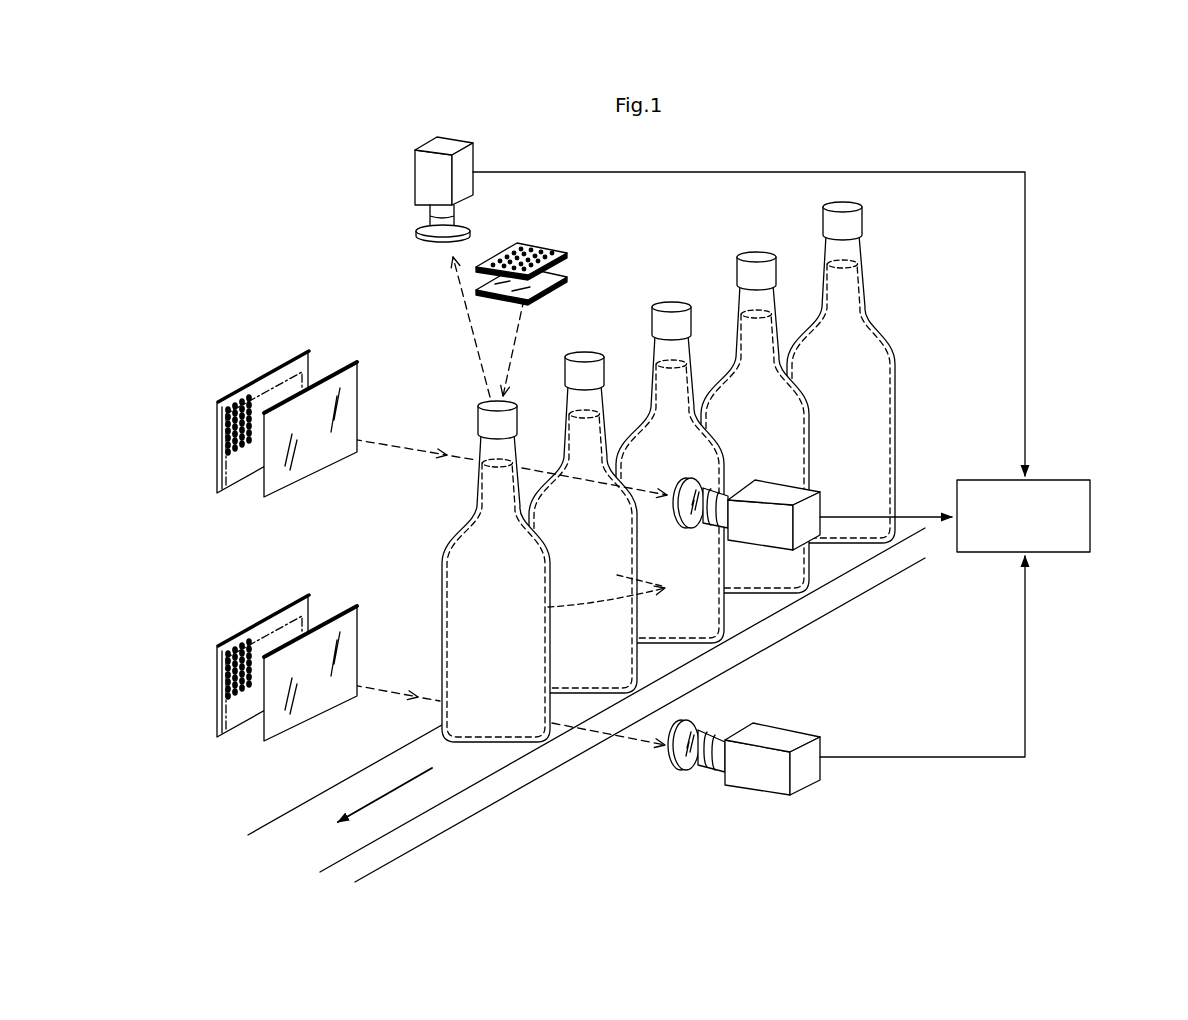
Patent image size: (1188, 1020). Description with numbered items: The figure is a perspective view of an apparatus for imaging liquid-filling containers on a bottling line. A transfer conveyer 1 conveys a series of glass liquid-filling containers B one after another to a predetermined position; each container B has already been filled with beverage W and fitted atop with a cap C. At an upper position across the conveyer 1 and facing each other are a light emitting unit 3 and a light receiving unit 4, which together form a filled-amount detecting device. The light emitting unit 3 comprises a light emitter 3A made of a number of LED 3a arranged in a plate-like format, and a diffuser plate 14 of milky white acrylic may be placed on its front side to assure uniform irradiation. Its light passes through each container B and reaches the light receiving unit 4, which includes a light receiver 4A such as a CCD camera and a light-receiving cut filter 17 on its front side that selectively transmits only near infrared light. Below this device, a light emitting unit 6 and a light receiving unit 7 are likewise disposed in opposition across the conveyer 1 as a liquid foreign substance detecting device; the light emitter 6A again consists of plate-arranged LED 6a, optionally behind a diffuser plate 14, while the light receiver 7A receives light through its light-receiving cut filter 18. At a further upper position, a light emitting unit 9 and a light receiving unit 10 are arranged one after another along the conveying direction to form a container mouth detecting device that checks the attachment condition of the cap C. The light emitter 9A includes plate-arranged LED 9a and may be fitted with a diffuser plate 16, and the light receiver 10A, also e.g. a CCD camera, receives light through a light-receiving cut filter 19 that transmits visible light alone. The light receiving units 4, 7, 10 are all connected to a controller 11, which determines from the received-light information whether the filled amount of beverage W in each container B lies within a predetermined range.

The transfer conveyer 1 is at (470, 808).
The light emitting unit 3 is at (205, 375).
The light emitter 3A is at (262, 375).
The LED 3a is at (250, 410).
The diffuser plate 14 is at (305, 465).
The light receiving unit 4 is at (770, 557).
The light receiver 4A is at (772, 479).
The light-receiving cut filter 17 is at (678, 479).
The light emitting unit 6 is at (200, 645).
The light emitter 6A is at (262, 618).
The LED 6a is at (250, 660).
The light receiving unit 7 is at (764, 804).
The light receiver 7A is at (773, 733).
The light-receiving cut filter 18 is at (692, 770).
The light emitting unit 9 is at (585, 248).
The light emitter 9A is at (516, 244).
The LED 9a is at (550, 246).
The diffuser plate 16 is at (562, 278).
The light receiving unit 10 is at (407, 189).
The light receiver 10A is at (416, 163).
The light-receiving cut filter 19 is at (430, 242).
The controller 11 is at (1094, 517).
The liquid-filling container B is at (628, 665).
The cap C is at (483, 412).
The beverage W is at (932, 350).